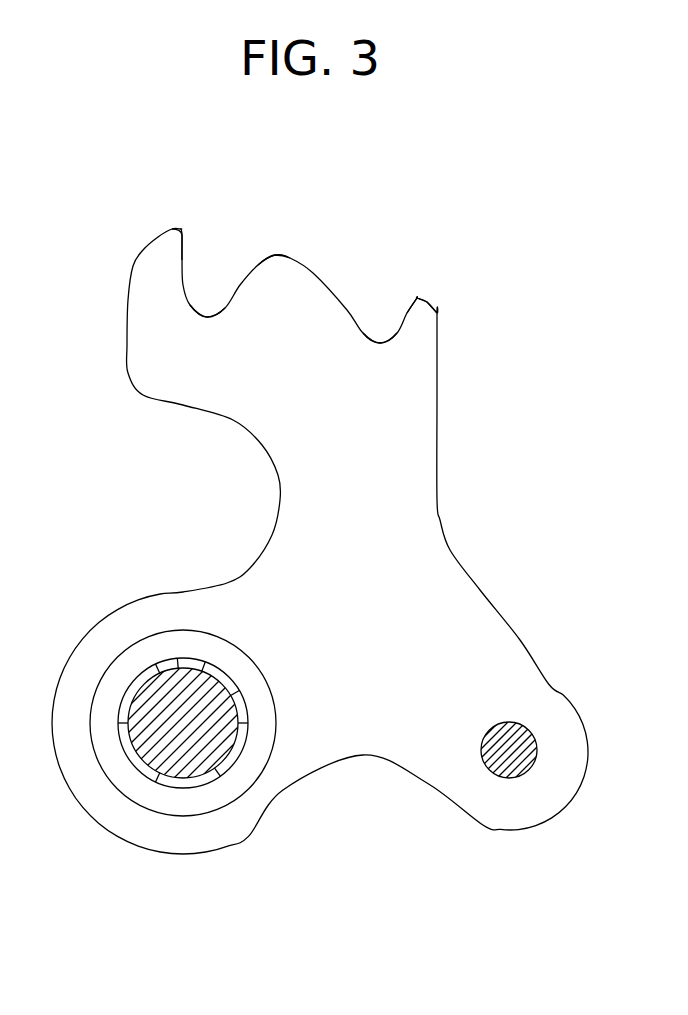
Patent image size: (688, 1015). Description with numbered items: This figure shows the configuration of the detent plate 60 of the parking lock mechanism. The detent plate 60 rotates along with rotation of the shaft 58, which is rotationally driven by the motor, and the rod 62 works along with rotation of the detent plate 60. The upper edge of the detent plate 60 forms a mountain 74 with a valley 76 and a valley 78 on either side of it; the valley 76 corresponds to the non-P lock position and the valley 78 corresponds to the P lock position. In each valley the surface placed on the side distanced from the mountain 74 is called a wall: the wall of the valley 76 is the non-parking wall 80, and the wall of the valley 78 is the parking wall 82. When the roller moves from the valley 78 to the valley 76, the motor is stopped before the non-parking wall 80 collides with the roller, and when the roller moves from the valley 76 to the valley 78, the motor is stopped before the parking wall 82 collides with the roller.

The shaft 58 is at (148, 700).
The detent plate 60 is at (425, 502).
The rod 62 is at (520, 723).
The mountain 74 is at (320, 275).
The valley 76 is at (392, 318).
The valley 78 is at (225, 297).
The non-parking wall 80 is at (408, 312).
The parking wall 82 is at (183, 263).